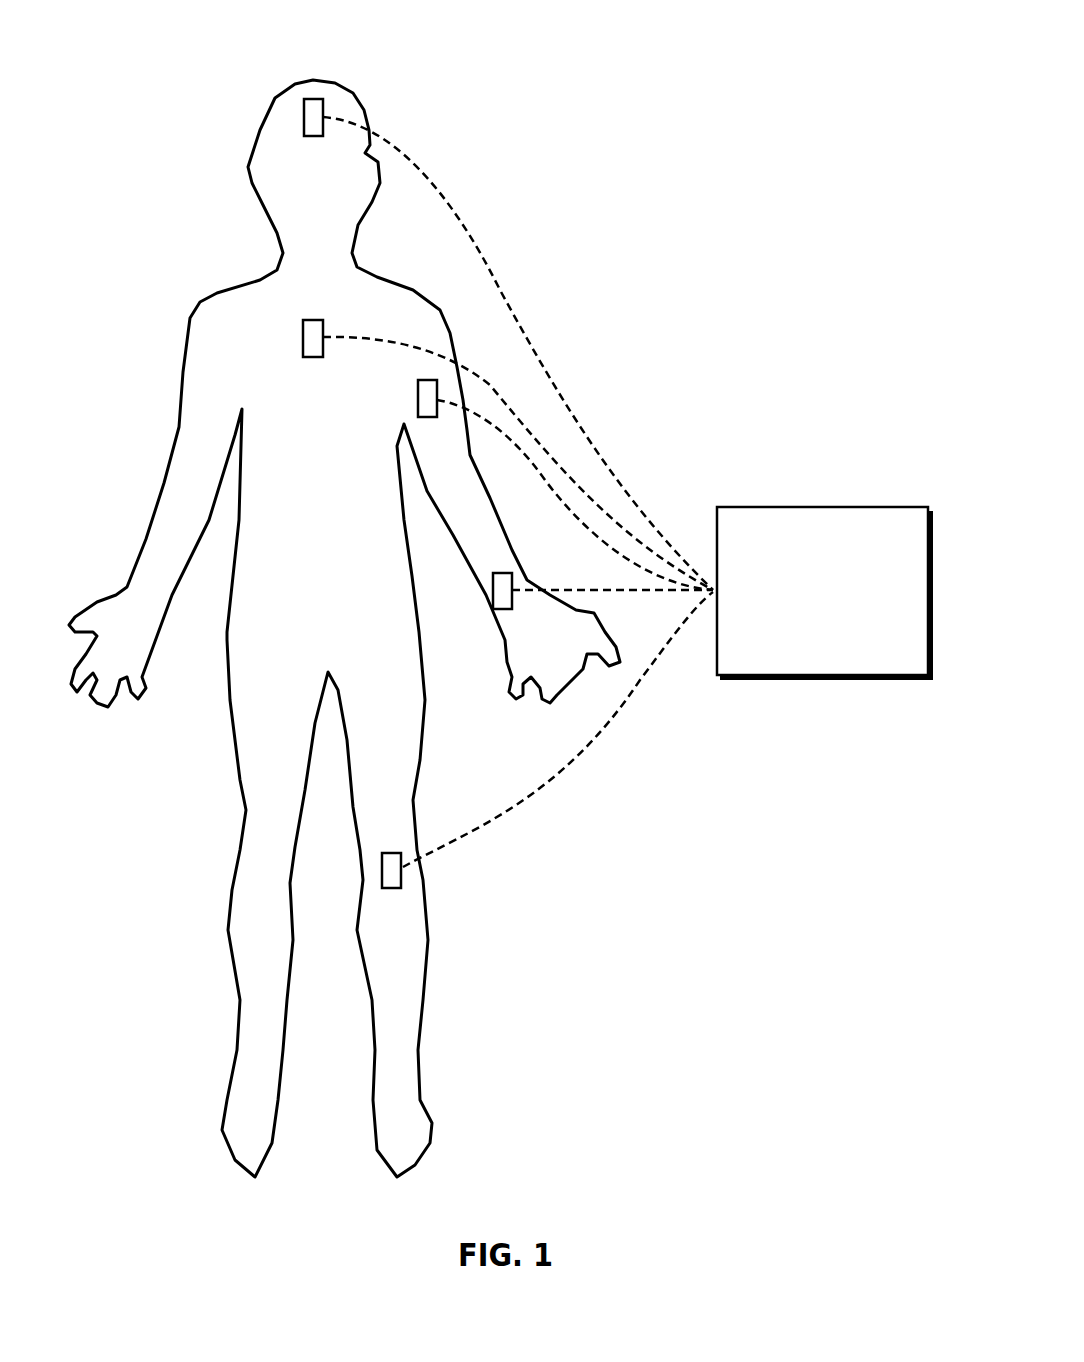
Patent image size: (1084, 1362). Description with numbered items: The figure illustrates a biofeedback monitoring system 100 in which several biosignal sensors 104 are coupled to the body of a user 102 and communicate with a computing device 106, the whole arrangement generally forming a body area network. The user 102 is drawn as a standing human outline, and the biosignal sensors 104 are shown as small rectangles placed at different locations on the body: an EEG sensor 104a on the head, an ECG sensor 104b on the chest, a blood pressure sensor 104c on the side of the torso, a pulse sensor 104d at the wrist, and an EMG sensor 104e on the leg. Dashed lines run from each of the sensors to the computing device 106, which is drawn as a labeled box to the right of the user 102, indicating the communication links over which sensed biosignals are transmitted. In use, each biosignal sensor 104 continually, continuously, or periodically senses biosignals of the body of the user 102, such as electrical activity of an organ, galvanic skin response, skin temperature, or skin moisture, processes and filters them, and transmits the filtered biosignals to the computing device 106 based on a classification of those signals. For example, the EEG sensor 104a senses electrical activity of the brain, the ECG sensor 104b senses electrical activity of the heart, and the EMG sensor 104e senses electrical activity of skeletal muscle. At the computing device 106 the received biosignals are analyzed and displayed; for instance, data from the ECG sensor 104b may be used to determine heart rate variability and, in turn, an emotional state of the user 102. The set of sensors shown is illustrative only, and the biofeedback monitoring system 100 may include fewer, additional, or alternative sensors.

The biofeedback monitoring system 100 is at (746, 163).
The user 102 is at (182, 190).
The biosignal sensors 104 is at (511, 200).
The EEG sensor 104a is at (313, 99).
The ECG sensor 104b is at (303, 337).
The blood pressure sensor 104c is at (418, 398).
The pulse sensor 104d is at (500, 573).
The EMG sensor 104e is at (401, 877).
The computing device 106 is at (873, 507).